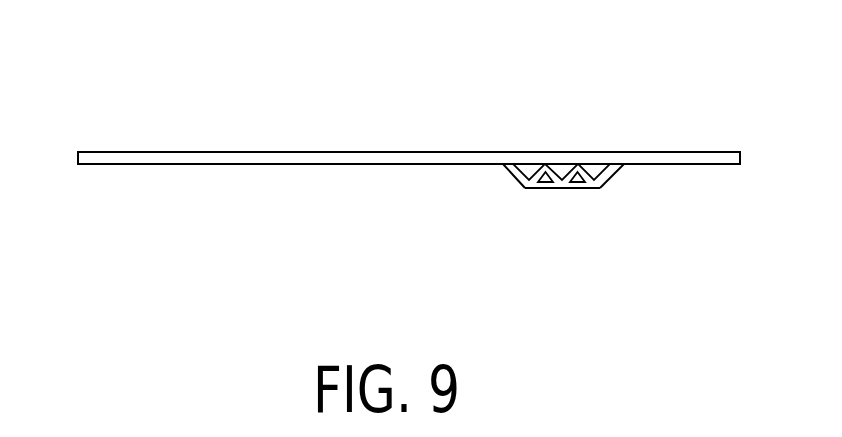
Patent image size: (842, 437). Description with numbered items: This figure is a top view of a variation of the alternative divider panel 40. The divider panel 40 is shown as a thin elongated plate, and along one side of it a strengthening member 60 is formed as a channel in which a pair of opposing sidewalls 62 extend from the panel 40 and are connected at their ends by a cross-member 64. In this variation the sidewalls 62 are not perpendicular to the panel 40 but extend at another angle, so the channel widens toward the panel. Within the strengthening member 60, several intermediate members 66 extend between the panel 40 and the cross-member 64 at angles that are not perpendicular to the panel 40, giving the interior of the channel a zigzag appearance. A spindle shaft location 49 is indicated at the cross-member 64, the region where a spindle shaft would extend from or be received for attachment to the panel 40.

The divider panel 40 is at (221, 110).
The spindle shaft location 49 is at (565, 203).
The strengthening member 60 is at (536, 184).
The sidewall 62 is at (506, 170).
The cross-member 64 is at (538, 189).
The intermediate member 66 is at (525, 166).